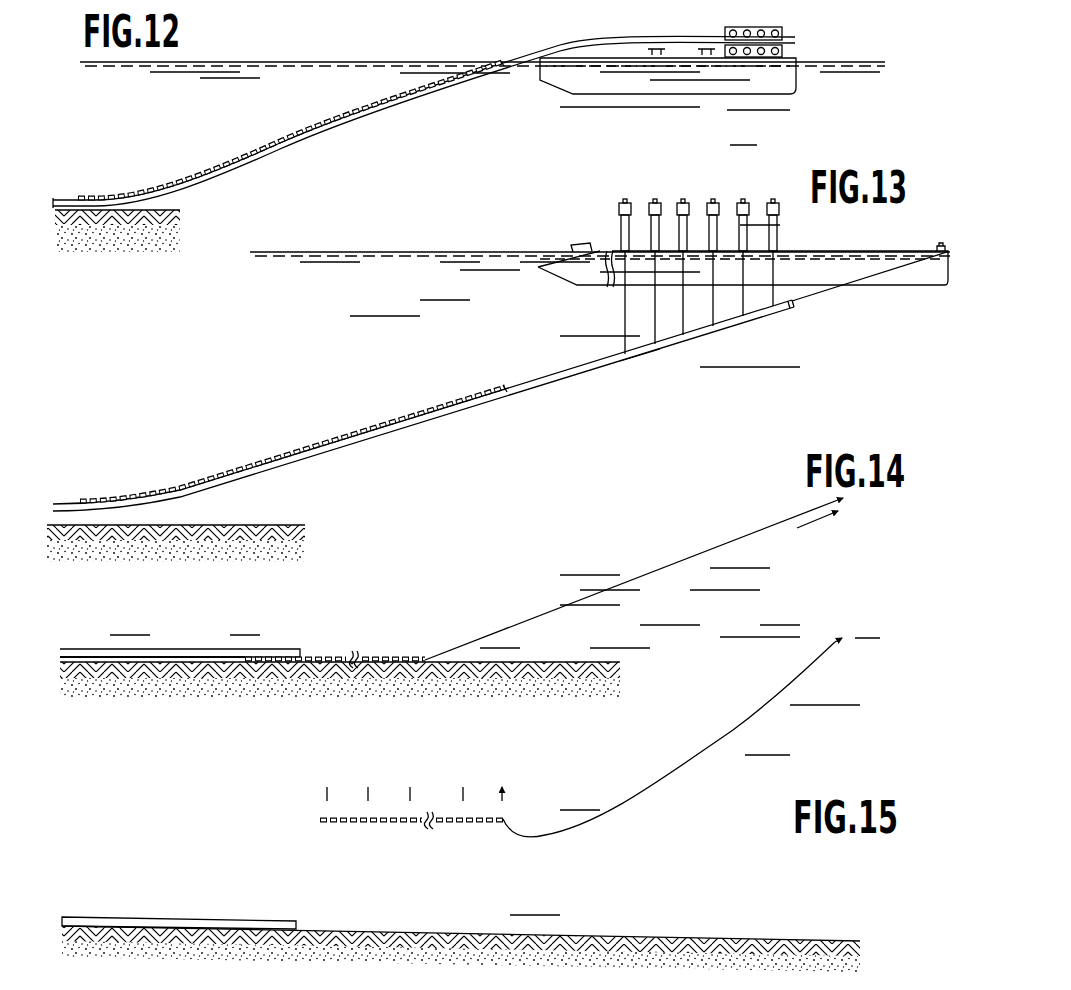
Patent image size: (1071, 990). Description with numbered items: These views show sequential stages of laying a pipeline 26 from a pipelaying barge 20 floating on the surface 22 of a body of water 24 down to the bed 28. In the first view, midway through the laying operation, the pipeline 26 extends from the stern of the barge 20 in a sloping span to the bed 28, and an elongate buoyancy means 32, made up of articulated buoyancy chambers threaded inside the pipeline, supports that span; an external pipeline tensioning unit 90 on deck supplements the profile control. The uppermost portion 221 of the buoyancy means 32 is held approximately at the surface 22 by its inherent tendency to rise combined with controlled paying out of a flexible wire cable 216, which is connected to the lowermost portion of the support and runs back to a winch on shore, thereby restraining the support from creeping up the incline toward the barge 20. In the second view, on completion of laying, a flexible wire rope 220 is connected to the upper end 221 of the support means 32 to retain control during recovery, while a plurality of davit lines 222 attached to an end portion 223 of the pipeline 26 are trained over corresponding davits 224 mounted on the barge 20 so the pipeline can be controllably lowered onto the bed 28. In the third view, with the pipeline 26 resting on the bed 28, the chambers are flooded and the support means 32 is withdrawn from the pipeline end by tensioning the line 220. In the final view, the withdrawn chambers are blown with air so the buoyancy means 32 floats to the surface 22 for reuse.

In FIG. 12, the pipelaying barge 20 is at (712, 93).
In FIG. 13, the pipelaying barge 20 is at (885, 287).
In FIG. 12, the surface 22 is at (385, 61).
In FIG. 13, the surface 22 is at (453, 252).
In FIG. 12, the body of water 24 is at (418, 150).
In FIG. 13, the body of water 24 is at (277, 375).
In FIG. 14, the body of water 24 is at (436, 611).
In FIG. 15, the body of water 24 is at (262, 868).
In FIG. 12, the pipeline 26 is at (565, 30).
In FIG. 13, the pipeline 26 is at (190, 478).
In FIG. 14, the pipeline 26 is at (211, 648).
In FIG. 15, the pipeline 26 is at (222, 917).
In FIG. 12, the bed 28 is at (113, 255).
In FIG. 13, the bed 28 is at (162, 565).
In FIG. 14, the bed 28 is at (270, 706).
In FIG. 15, the bed 28 is at (628, 940).
In FIG. 12, the elongate buoyancy means 32 is at (272, 140).
In FIG. 13, the elongate buoyancy means 32 is at (337, 440).
In FIG. 14, the elongate buoyancy means 32 is at (333, 654).
In FIG. 15, the elongate buoyancy means 32 is at (424, 838).
In FIG. 12, the external pipeline tensioning unit 90 is at (783, 29).
In FIG. 12, the flexible wire cable 216 is at (55, 201).
In FIG. 13, the flexible wire rope 220 is at (820, 298).
In FIG. 14, the flexible wire rope 220 is at (563, 607).
In FIG. 15, the flexible wire rope 220 is at (682, 772).
In FIG. 12, the uppermost portion 221 is at (505, 72).
In FIG. 13, the uppermost portion 221 is at (508, 392).
In FIG. 13, the davit lines 222 is at (622, 313).
In FIG. 13, the end portion 223 is at (637, 364).
In FIG. 13, the davits 224 is at (630, 203).